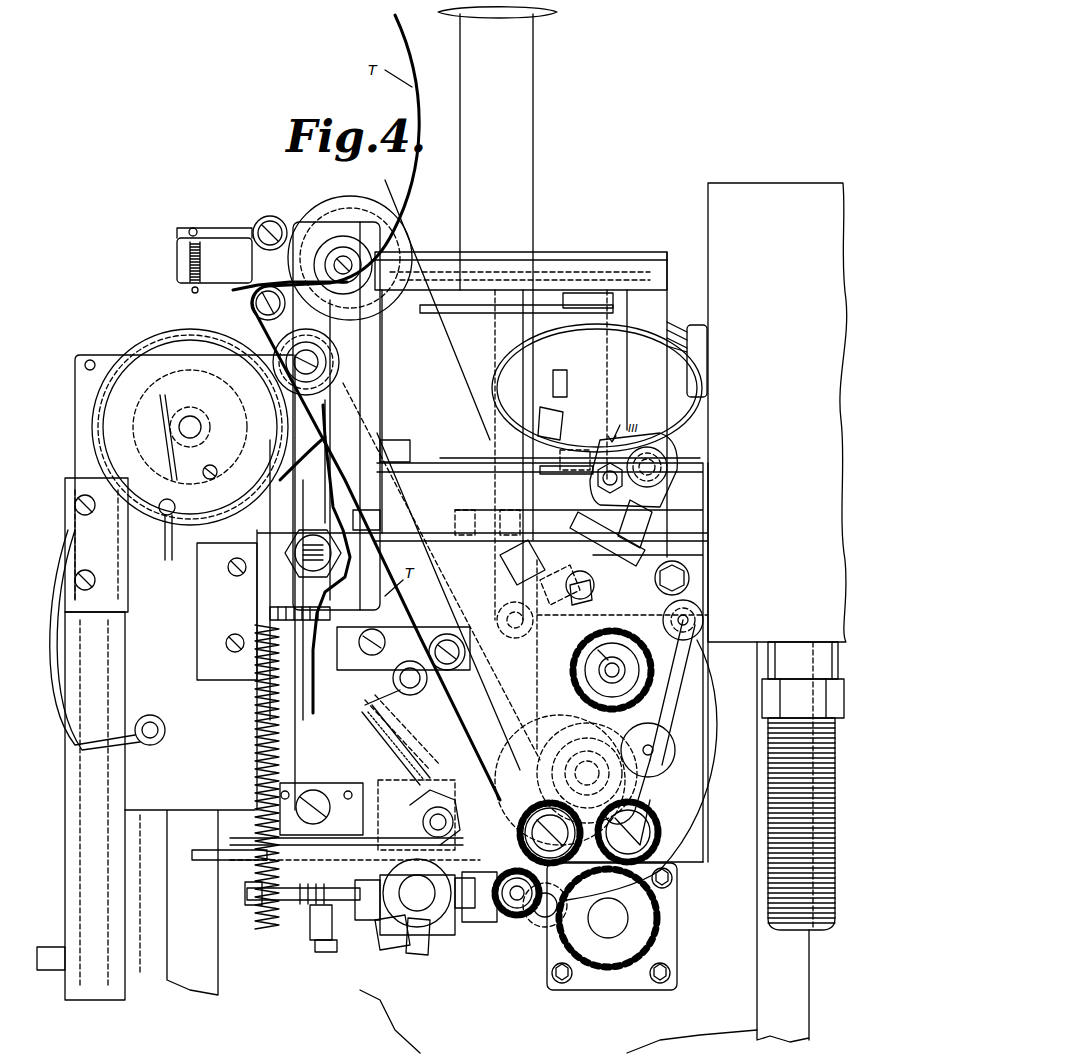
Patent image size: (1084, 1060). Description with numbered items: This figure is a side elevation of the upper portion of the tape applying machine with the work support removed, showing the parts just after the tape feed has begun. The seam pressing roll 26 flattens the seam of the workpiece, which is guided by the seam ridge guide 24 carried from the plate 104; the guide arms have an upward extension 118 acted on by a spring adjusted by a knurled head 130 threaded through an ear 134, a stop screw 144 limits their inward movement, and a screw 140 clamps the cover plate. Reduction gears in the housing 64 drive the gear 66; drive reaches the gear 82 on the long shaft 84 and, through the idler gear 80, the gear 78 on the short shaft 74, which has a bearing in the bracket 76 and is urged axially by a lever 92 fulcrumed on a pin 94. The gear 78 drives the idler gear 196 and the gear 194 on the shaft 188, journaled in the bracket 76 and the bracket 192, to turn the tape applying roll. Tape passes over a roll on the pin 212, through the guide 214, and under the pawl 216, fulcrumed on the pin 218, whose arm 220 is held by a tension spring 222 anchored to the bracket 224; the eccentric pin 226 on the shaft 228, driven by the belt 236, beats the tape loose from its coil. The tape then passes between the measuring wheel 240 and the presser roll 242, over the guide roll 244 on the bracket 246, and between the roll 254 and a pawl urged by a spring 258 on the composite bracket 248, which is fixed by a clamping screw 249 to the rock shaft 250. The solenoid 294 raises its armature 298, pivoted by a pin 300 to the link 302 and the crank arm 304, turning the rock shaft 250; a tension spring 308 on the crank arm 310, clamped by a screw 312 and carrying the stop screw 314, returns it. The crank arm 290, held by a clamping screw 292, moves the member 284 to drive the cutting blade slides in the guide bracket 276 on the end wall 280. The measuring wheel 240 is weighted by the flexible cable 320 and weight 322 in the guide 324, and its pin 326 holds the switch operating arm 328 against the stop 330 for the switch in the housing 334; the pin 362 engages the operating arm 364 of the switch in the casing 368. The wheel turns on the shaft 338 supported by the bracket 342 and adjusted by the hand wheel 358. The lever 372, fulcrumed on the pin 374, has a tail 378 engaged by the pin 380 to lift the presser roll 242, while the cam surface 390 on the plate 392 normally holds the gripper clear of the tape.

The seam ridge guide 24 is at (660, 795).
The seam pressing roll 26 is at (575, 722).
The housing 64 is at (677, 958).
The gear 66 is at (600, 965).
The short shaft 74 is at (672, 862).
The bracket 76 is at (690, 578).
The gear 78 is at (600, 845).
The idler gear 80 is at (685, 760).
The gear 82 is at (572, 677).
The long shaft 84 is at (700, 628).
The lever 92 is at (672, 700).
The pin 94 is at (675, 740).
The plate 104 is at (600, 522).
The upward extension 118 is at (600, 462).
The knurled head 130 is at (670, 445).
The ear 134 is at (670, 462).
The screw 140 is at (655, 520).
The stop screw 144 is at (597, 480).
The shaft 188 is at (513, 915).
The bracket 192 is at (360, 925).
The gear 194 is at (520, 920).
The idler gear 196 is at (620, 862).
The pin 212 is at (250, 315).
The guide 214 is at (240, 292).
The pawl 216 is at (252, 267).
The pin 218 is at (258, 225).
The arm 220 is at (222, 232).
The tension spring 222 is at (185, 260).
The bracket 224 is at (272, 218).
The eccentric pin 226 is at (348, 255).
The shaft 228 is at (343, 240).
The belt 236 is at (425, 270).
The measuring wheel 240 is at (170, 330).
The presser roll 242 is at (345, 365).
The guide roll 244 is at (322, 452).
The bracket 246 is at (331, 470).
The composite bracket 248 is at (300, 756).
The clamping screw 249 is at (385, 935).
The rock shaft 250 is at (420, 930).
The roll 254 is at (440, 640).
The spring 258 is at (300, 738).
The guide bracket 276 is at (296, 783).
The end wall 280 is at (413, 550).
The member 284 is at (424, 812).
The crank arm 290 is at (420, 960).
The clamping screw 292 is at (392, 950).
The solenoid 294 is at (568, 330).
The armature 298 is at (500, 568).
The pin 300 is at (505, 606).
The link 302 is at (598, 655).
The crank arm 304 is at (482, 925).
The tension spring 308 is at (240, 852).
The crank arm 310 is at (290, 906).
The screw 312 is at (465, 915).
The stop screw 314 is at (315, 950).
The flexible cable 320 is at (150, 745).
The weight 322 is at (130, 808).
The guide 324 is at (118, 840).
The pin 326 is at (160, 440).
The switch operating arm 328 is at (170, 498).
The stop 330 is at (178, 520).
The housing 334 is at (218, 543).
The shaft 338 is at (196, 420).
The bracket 342 is at (85, 355).
The hand wheel 358 is at (190, 342).
The pin 362 is at (212, 465).
The operating arm 364 is at (160, 400).
The casing 368 is at (100, 492).
The lever 372 is at (355, 405).
The pin 374 is at (330, 570).
The tail 378 is at (275, 760).
The pin 380 is at (405, 748).
The cam surface 390 is at (395, 680).
The plate 392 is at (355, 630).